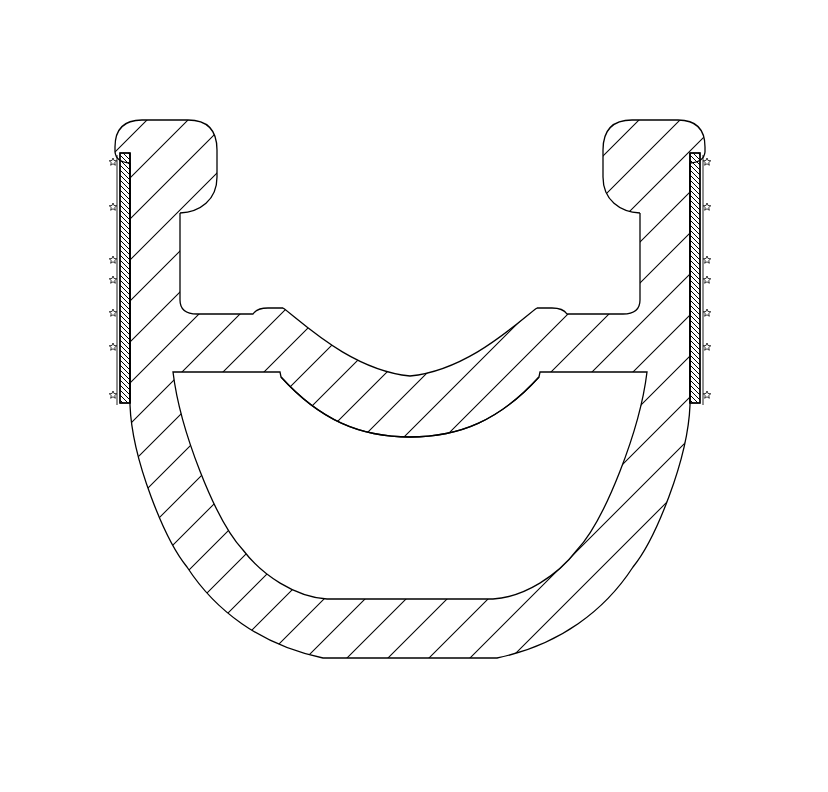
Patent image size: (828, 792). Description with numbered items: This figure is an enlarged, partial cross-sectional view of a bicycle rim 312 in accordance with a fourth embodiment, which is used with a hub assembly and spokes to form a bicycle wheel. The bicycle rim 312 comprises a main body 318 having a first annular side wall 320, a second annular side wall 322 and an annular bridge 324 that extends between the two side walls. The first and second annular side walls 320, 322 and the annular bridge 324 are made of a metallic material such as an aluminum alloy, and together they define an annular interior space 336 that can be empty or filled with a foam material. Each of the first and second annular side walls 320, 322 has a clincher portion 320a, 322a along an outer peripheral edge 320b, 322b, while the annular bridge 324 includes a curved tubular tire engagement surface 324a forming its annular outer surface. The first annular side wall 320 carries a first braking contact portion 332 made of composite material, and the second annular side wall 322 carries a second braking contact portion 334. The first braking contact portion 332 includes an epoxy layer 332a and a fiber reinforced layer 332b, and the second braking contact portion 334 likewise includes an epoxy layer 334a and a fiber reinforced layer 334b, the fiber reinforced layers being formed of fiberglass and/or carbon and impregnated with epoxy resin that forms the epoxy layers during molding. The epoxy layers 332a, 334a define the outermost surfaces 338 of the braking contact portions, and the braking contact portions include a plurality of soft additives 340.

The bicycle rim 312 is at (131, 74).
The main body 318 is at (722, 472).
The first annular side wall 320 is at (239, 518).
The clincher portion 320a is at (228, 155).
The outer peripheral edge 320b is at (171, 110).
The second annular side wall 322 is at (668, 509).
The clincher portion 322a is at (592, 155).
The outer peripheral edge 322b is at (660, 110).
The annular bridge 324 is at (496, 424).
The curved tubular tire engagement surface 324a is at (425, 374).
The first braking contact portion 332 is at (95, 148).
The epoxy layer 332a is at (130, 293).
The fiber reinforced layer 332b is at (130, 247).
The second braking contact portion 334 is at (725, 148).
The epoxy layer 334a is at (690, 293).
The fiber reinforced layer 334b is at (690, 247).
The annular interior space 336 is at (426, 500).
The outermost surfaces 338 is at (115, 154).
The soft additives 340 is at (113, 348).